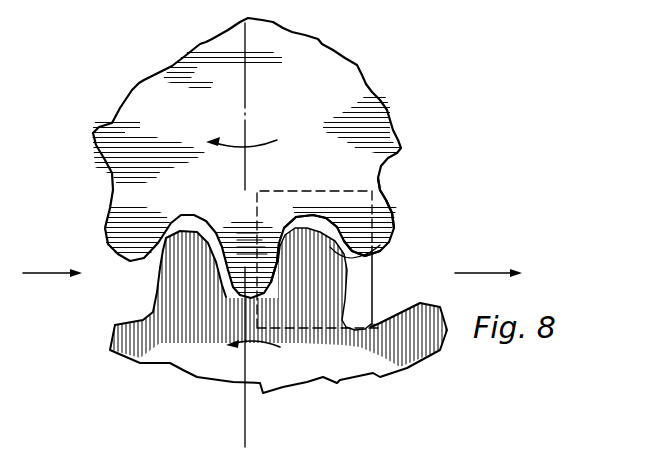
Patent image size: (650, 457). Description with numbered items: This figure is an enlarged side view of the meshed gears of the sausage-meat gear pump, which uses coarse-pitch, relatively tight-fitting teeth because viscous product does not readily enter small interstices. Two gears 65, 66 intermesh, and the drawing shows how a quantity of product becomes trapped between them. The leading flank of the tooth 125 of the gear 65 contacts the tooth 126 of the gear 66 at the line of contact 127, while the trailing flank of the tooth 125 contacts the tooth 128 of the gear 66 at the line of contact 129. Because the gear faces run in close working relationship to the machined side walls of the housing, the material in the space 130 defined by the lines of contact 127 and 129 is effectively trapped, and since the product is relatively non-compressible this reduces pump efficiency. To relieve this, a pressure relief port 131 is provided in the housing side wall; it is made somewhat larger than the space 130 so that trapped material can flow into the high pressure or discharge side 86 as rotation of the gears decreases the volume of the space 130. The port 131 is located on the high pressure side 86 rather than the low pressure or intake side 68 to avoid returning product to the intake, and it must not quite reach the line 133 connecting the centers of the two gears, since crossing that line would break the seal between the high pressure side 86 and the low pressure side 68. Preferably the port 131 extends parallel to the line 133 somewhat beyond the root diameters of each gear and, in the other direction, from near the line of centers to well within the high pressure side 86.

The gear 65 is at (212, 355).
The gear 66 is at (334, 96).
The low pressure side 68 is at (114, 288).
The high pressure side 86 is at (412, 271).
The tooth 125 is at (318, 268).
The tooth 126 is at (235, 256).
The line of contact 127 is at (277, 262).
The tooth 128 is at (388, 212).
The line of contact 129 is at (365, 258).
The space 130 is at (307, 223).
The pressure relief port 131 is at (374, 298).
The line connecting the centers 133 is at (247, 97).